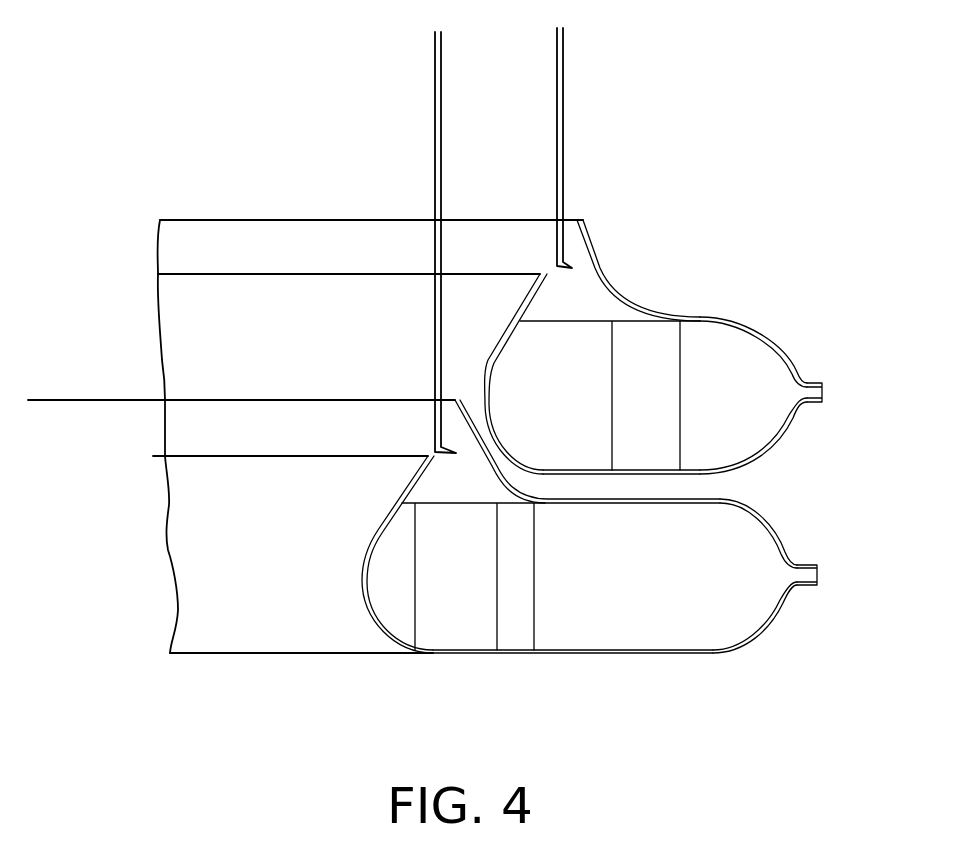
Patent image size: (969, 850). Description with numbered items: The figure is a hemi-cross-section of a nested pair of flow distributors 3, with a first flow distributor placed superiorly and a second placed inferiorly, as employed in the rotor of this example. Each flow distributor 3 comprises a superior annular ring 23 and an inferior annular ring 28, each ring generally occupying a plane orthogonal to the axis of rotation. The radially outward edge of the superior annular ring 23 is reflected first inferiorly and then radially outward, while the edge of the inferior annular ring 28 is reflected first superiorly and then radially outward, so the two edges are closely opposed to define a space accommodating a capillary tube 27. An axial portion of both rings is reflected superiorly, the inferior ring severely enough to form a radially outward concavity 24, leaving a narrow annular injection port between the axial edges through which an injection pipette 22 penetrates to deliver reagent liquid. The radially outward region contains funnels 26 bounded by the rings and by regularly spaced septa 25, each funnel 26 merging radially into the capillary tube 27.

The flow distributor 3 is at (290, 523).
The injection pipette 22 is at (435, 193).
The superior annular ring 23 is at (700, 313).
The radially outward concavity 24 is at (527, 298).
The septa 25 is at (685, 387).
The funnel 26 is at (775, 397).
The capillary tube 27 is at (813, 383).
The inferior annular ring 28 is at (703, 474).